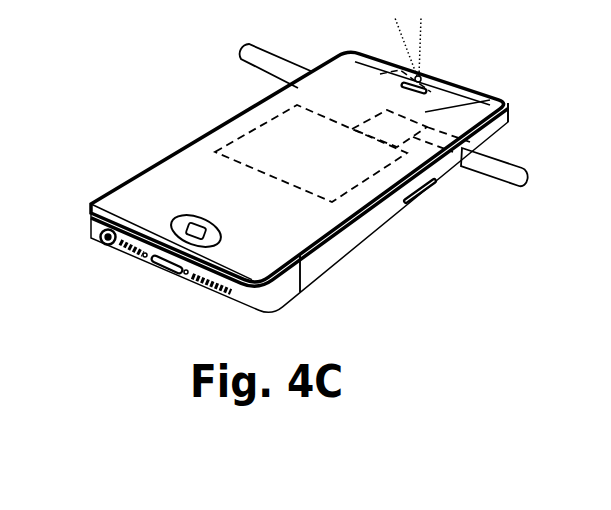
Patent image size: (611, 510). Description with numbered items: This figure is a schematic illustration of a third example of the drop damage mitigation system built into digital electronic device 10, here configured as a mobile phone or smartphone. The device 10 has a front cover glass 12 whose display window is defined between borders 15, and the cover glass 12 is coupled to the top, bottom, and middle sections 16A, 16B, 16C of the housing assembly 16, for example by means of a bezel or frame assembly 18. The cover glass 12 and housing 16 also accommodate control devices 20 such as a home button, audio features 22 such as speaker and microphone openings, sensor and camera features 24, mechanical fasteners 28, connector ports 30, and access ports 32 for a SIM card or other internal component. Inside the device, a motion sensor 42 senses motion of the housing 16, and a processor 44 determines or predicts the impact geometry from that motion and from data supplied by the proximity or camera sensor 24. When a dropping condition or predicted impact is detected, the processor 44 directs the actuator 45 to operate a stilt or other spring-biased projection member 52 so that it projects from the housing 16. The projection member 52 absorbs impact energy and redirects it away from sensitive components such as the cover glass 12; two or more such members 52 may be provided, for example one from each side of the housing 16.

The digital electronic device 10 is at (147, 46).
The front cover glass 12 is at (192, 160).
The borders 15 is at (360, 64).
The housing assembly 16 is at (484, 205).
The top housing section 16A is at (273, 297).
The bottom housing section 16B is at (497, 131).
The middle housing section 16C is at (320, 260).
The bezel or frame assembly 18 is at (363, 223).
The control devices 20 is at (178, 219).
The audio features 22 is at (213, 288).
The sensor and camera features 24 is at (421, 77).
The mechanical fasteners 28 is at (185, 275).
The connector ports 30 is at (101, 238).
The access ports 32 is at (432, 195).
The motion sensor 42 is at (222, 146).
The processor 44 is at (263, 120).
The actuator 45 is at (490, 100).
The projection member 52 is at (268, 58).